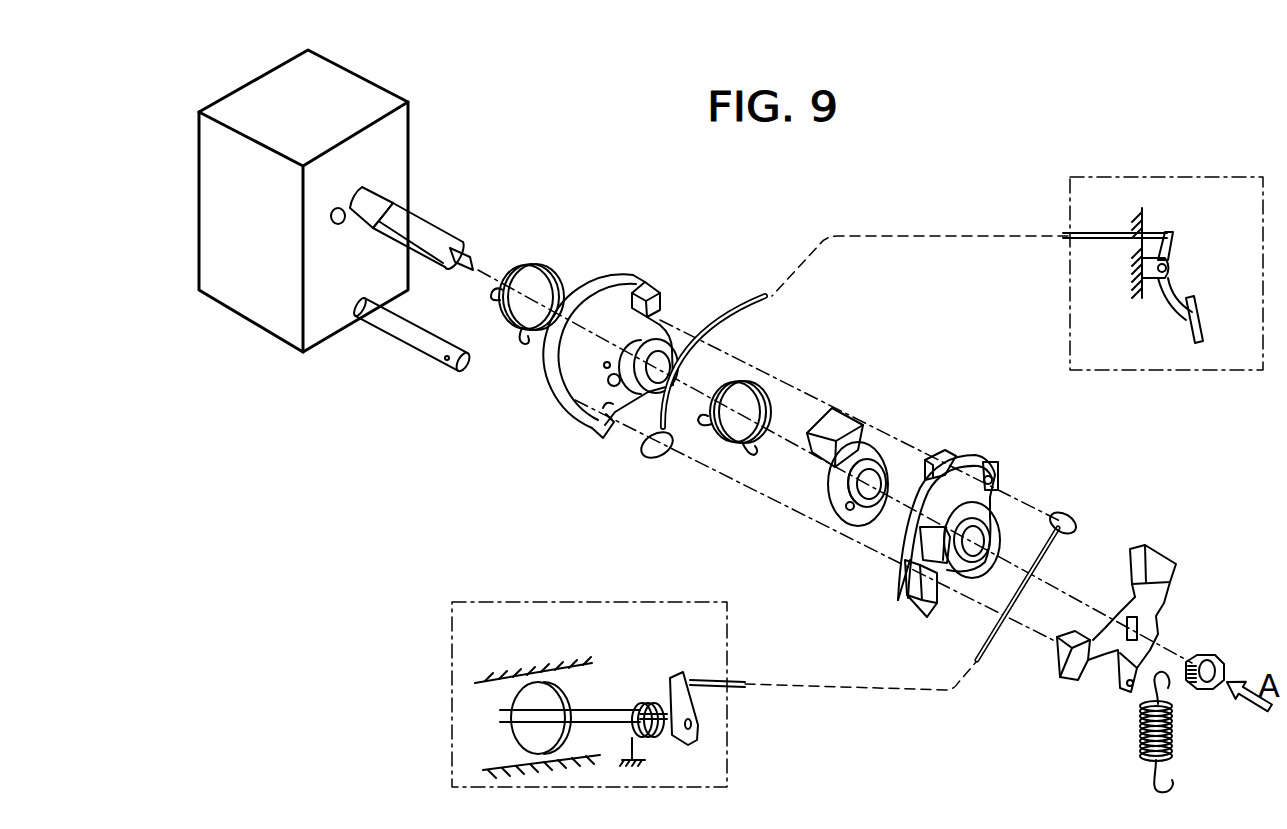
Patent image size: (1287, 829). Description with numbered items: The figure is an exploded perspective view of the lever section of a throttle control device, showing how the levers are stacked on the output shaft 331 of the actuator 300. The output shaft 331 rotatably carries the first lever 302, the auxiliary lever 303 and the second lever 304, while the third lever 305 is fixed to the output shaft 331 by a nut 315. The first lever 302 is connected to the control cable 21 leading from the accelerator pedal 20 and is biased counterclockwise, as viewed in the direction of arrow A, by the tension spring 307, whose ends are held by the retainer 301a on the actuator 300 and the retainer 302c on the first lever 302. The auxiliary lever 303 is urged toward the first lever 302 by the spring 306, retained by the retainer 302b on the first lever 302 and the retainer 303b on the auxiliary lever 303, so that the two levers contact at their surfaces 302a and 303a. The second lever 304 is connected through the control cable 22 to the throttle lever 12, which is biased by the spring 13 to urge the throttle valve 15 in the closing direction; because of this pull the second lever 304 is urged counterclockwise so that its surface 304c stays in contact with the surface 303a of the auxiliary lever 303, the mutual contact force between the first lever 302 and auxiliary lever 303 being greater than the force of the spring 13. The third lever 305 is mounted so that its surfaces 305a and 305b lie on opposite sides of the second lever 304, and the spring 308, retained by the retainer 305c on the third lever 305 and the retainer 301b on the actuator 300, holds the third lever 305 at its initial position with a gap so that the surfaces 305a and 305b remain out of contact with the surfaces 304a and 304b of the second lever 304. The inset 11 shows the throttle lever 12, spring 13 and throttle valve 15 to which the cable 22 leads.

The actuator 300 is at (403, 118).
The output shaft 331 is at (430, 230).
The retainer 301a is at (342, 225).
The retainer 301b is at (420, 333).
The tension spring 307 is at (545, 284).
The first lever 302 is at (595, 260).
The contact surface of first lever 302a is at (645, 300).
The retainer 302b is at (609, 383).
The retainer 302c is at (605, 363).
The control cable 21 is at (763, 296).
The spring 306 is at (727, 440).
The auxiliary lever 303 is at (828, 492).
The contact surface of auxiliary lever 303a is at (868, 437).
The retainer 303b is at (848, 508).
The second lever 304 is at (903, 527).
The surface of second lever 304a is at (920, 548).
The surface of second lever 304b is at (928, 587).
The contact surface of second lever 304c is at (933, 460).
The control cable 22 is at (983, 649).
The third lever 305 is at (1177, 575).
The surface of third lever 305a is at (1128, 558).
The surface of third lever 305b is at (1058, 638).
The retainer 305c is at (1131, 693).
The nut 315 is at (1207, 653).
The spring 308 is at (1178, 740).
The accelerator pedal 20 is at (1175, 297).
The housing 11 is at (728, 630).
The throttle lever 12 is at (675, 675).
The spring 13 is at (652, 703).
The throttle valve 15 is at (560, 690).